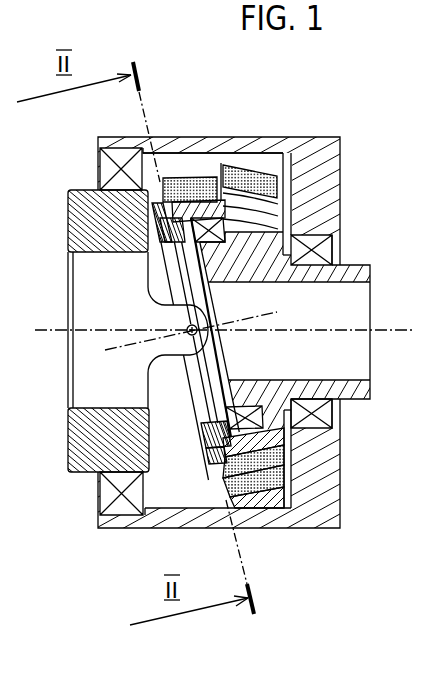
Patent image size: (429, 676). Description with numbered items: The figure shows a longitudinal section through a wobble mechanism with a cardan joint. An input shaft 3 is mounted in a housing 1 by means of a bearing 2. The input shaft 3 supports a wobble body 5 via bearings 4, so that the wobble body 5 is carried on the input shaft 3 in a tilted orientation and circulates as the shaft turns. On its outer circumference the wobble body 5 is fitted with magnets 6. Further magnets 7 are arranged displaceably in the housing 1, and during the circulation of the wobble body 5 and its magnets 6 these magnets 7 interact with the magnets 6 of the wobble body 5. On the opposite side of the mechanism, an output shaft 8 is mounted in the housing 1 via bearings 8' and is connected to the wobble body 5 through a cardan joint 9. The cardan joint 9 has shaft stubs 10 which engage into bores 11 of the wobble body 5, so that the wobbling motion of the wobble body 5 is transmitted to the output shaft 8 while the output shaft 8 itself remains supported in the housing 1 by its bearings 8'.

The housing 1 is at (311, 148).
The bearing 2 is at (340, 234).
The input shaft 3 is at (362, 301).
The bearings 4 is at (220, 195).
The wobble body 5 is at (208, 172).
The magnets 6 is at (180, 170).
The magnets 7 is at (290, 162).
The output shaft 8 is at (214, 464).
The bearings 8' is at (214, 310).
The cardan joint 9 is at (117, 325).
The shaft stubs 10 is at (127, 254).
The bores 11 is at (210, 467).